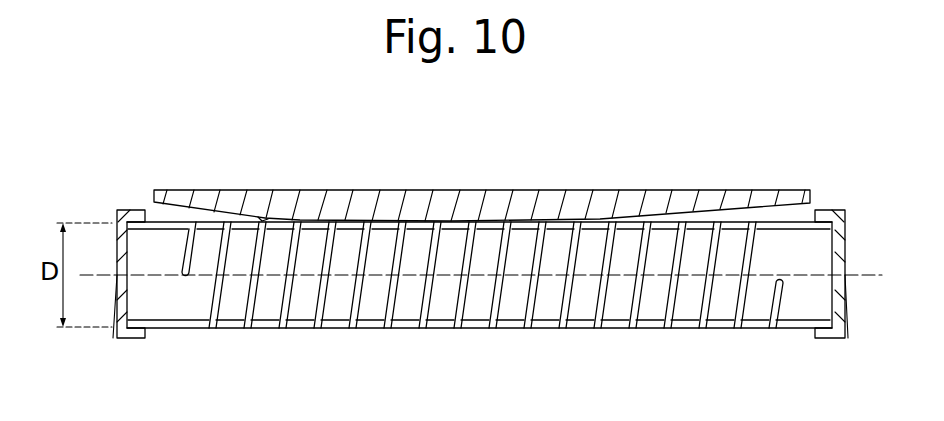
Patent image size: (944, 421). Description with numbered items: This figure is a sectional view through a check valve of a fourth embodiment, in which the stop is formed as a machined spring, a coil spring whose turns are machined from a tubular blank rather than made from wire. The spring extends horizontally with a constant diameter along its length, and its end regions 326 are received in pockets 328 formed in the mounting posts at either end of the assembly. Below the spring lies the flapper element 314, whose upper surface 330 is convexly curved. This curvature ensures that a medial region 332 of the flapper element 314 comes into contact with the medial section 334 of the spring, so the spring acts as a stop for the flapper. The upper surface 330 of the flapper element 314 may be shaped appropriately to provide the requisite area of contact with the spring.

The flapper element 314 is at (600, 190).
The end regions 326 is at (170, 330).
The pockets 328 is at (137, 210).
The upper surface 330 is at (258, 217).
The medial region 332 is at (475, 222).
The medial section 334 is at (479, 266).